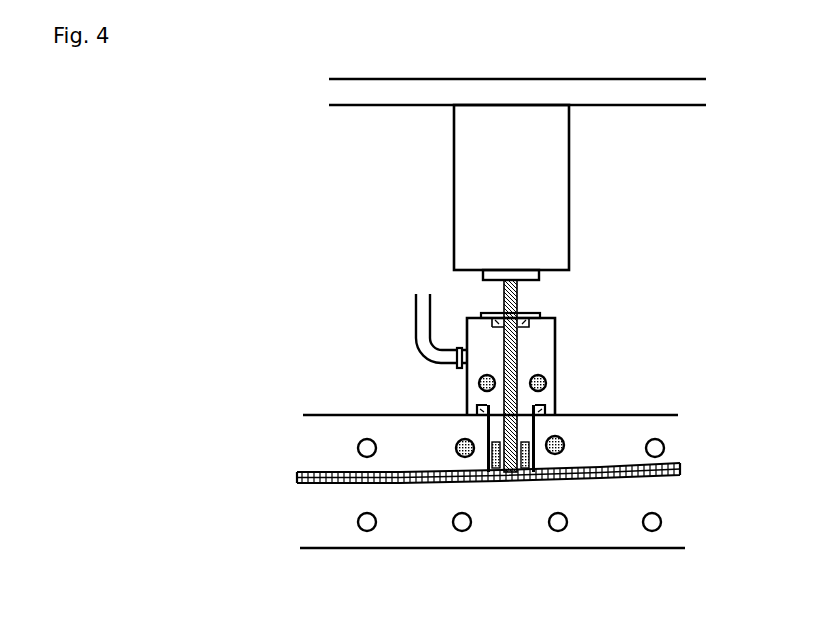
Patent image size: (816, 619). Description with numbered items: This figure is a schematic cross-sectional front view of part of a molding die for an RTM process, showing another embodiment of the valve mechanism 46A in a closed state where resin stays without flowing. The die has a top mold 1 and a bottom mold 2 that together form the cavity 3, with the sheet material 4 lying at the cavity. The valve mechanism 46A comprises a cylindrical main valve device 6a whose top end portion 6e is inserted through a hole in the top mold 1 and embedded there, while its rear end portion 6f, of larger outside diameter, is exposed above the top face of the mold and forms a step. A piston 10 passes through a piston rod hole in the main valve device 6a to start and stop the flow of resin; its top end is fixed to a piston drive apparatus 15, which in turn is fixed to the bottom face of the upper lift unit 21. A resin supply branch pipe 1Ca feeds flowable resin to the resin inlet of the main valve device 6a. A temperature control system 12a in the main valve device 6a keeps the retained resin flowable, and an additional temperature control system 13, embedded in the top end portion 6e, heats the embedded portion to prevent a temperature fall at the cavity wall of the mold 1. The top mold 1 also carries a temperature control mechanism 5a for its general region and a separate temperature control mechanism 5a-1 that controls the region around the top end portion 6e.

The upper lift unit 21 is at (638, 103).
The piston drive apparatus 15 is at (569, 185).
The piston 10 is at (519, 302).
The rear end portion 6f is at (555, 340).
The valve mechanism 46A is at (533, 338).
The main valve device 6a is at (543, 360).
The temperature control system 12a is at (478, 388).
The top end portion 6e is at (530, 456).
The temperature control system 13 is at (528, 447).
The resin supply branch pipe 1Ca is at (415, 315).
The top mold 1 is at (305, 428).
The temperature control mechanism 5a is at (358, 428).
The temperature control mechanism 5a-1 is at (463, 453).
The bottom mold 2 is at (320, 504).
The cavity 3 is at (485, 483).
The lower film sheet 4 is at (582, 480).